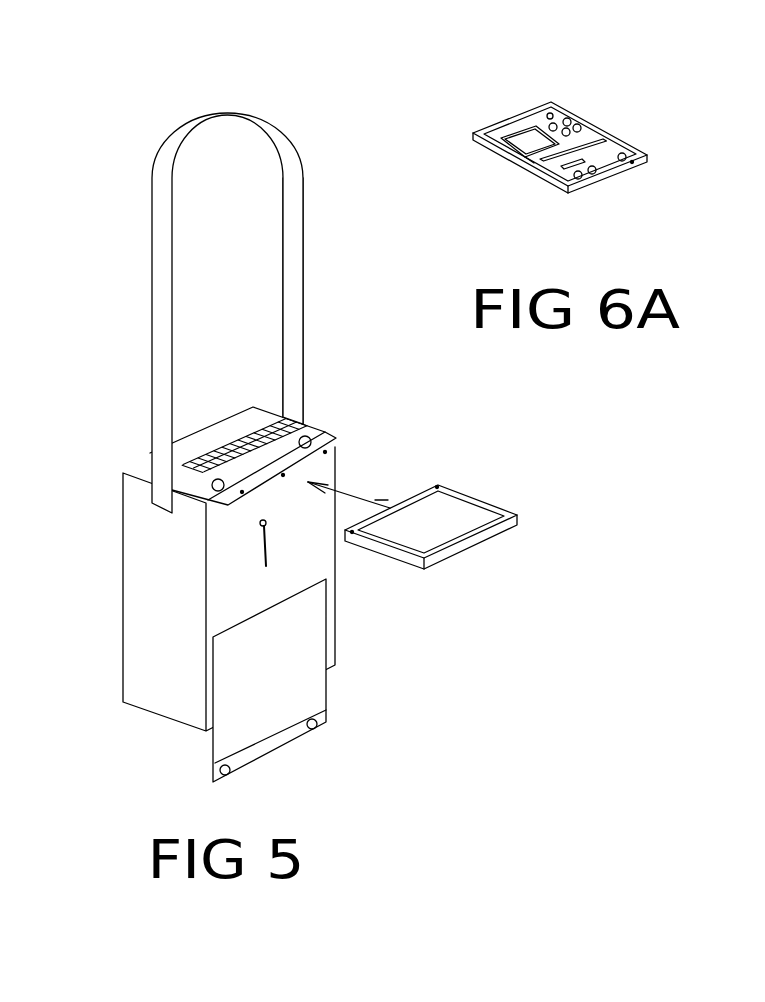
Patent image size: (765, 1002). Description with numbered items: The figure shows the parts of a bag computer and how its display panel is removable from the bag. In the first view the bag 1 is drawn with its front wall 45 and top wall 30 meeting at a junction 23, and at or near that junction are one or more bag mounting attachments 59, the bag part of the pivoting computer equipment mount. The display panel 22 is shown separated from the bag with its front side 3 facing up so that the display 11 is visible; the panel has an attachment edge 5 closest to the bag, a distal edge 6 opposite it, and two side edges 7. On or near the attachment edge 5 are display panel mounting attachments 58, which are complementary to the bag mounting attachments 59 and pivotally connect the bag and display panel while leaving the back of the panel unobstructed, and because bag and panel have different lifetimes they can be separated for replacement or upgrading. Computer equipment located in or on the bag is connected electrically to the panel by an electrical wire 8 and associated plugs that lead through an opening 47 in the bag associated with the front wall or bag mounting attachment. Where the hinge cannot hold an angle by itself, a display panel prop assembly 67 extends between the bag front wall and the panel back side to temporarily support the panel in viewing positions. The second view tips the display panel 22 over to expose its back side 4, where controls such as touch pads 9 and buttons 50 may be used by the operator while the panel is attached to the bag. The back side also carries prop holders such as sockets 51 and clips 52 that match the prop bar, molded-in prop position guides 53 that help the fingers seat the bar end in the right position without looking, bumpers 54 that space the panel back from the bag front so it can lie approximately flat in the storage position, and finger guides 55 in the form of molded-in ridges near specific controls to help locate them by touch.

In FIG. 5, the bag 1 is at (138, 462).
In FIG. 5, the front side 3 is at (488, 530).
In FIG. 6A, the back side 4 is at (536, 118).
In FIG. 5, the attachment edge 5 is at (400, 502).
In FIG. 5, the distal edge 6 is at (490, 533).
In FIG. 5, the side edges 7 is at (410, 565).
In FIG. 5, the electrical wire 8 is at (388, 502).
In FIG. 6A, the touch pads 9 is at (500, 140).
In FIG. 5, the display 11 is at (437, 525).
In FIG. 5, the display panel 22 is at (467, 552).
In FIG. 6A, the display panel 22 is at (551, 100).
In FIG. 5, the junction 23 is at (203, 500).
In FIG. 5, the top wall 30 is at (223, 432).
In FIG. 5, the front wall 45 is at (218, 612).
In FIG. 5, the opening 47 is at (283, 475).
In FIG. 6A, the buttons 50 is at (540, 121).
In FIG. 6A, the sockets 51 is at (560, 151).
In FIG. 6A, the clips 52 is at (532, 162).
In FIG. 6A, the prop position guides 53 is at (594, 146).
In FIG. 6A, the bumpers 54 is at (550, 113).
In FIG. 6A, the finger guides 55 is at (580, 179).
In FIG. 5, the display panel mounting attachments 58 is at (418, 496).
In FIG. 5, the bag mounting attachments 59 is at (312, 455).
In FIG. 5, the display panel prop assembly 67 is at (257, 543).